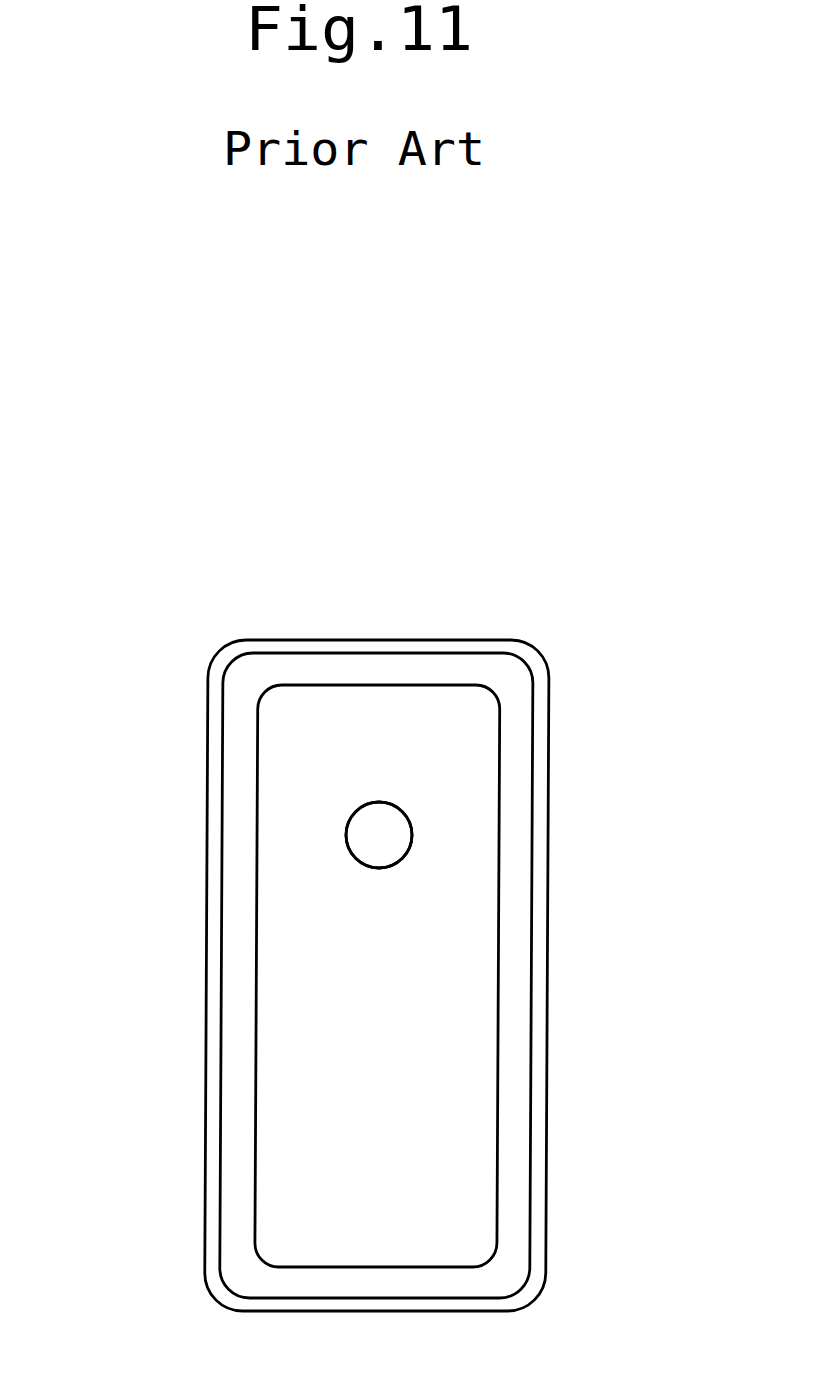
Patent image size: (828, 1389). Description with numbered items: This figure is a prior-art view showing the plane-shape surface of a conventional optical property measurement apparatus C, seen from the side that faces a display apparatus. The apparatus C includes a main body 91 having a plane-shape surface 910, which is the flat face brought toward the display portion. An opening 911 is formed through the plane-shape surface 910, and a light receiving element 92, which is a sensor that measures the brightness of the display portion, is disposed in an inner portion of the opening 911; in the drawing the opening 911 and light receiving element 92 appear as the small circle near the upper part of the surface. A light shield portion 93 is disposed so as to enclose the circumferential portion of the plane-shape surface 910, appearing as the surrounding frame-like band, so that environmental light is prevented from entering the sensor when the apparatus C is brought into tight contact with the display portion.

The optical property measurement apparatus C is at (206, 595).
The main body 91 is at (222, 816).
The light receiving element 92 is at (355, 832).
The light shield portion 93 is at (513, 752).
The plane-shape surface 910 is at (410, 975).
The opening 911 is at (380, 805).